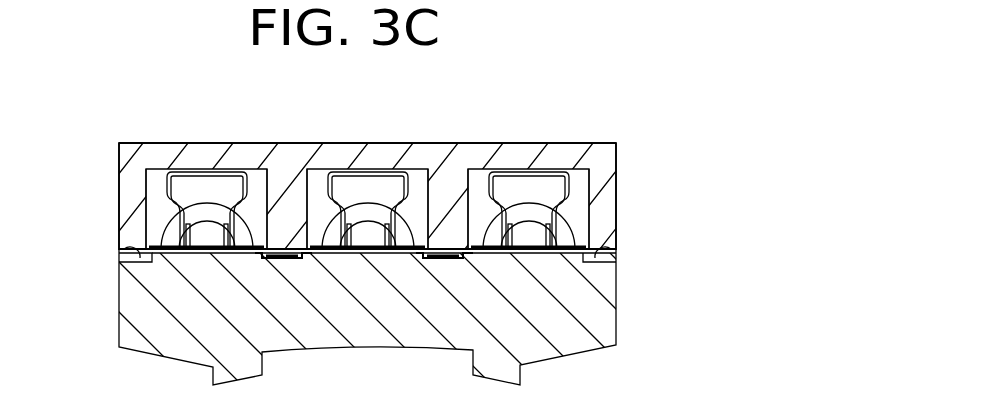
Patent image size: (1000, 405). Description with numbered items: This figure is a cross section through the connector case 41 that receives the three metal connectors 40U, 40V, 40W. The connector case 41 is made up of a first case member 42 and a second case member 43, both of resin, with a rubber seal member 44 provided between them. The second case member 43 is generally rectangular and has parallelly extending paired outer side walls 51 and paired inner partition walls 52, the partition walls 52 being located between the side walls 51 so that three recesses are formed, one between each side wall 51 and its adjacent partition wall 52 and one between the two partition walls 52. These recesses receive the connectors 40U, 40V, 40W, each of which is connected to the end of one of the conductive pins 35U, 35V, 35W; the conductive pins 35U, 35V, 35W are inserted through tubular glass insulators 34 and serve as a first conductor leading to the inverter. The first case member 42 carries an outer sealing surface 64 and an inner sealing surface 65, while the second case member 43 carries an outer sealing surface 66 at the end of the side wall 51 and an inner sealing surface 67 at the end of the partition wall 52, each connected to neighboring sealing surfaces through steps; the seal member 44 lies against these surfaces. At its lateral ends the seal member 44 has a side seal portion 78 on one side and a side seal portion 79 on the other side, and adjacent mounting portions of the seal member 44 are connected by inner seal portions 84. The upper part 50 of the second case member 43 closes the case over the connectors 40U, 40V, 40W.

The connector case 41 is at (637, 143).
The first case member 42 is at (617, 319).
The second case member 43 is at (617, 171).
The seal member 44 is at (617, 256).
The protective substrate body 50 is at (372, 152).
The outer side wall 51 is at (122, 215).
The inner partition wall 52 is at (290, 186).
The tubular insulator 34 is at (192, 196).
The conductive pin 35U is at (210, 244).
The conductive pin 35V is at (368, 244).
The conductive pin 35W is at (532, 250).
The connector 40U is at (160, 170).
The connector 40V is at (327, 170).
The connector 40W is at (497, 170).
The outer sealing surface 64 is at (147, 241).
The inner sealing surface 65 is at (246, 247).
The outer sealing surface 66 is at (124, 277).
The inner sealing surface 67 is at (293, 258).
The side seal portion 78 is at (608, 248).
The side seal portion 79 is at (124, 255).
The inner seal portion 84 is at (272, 258).